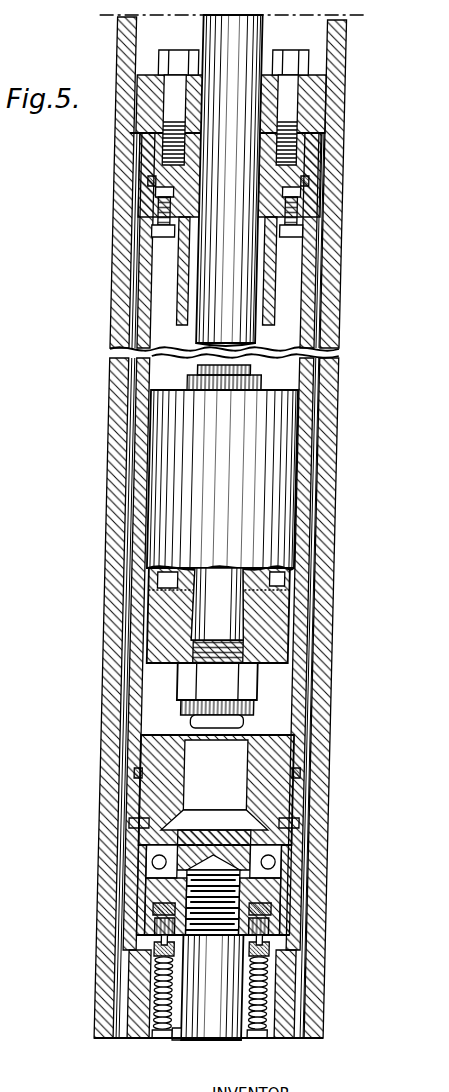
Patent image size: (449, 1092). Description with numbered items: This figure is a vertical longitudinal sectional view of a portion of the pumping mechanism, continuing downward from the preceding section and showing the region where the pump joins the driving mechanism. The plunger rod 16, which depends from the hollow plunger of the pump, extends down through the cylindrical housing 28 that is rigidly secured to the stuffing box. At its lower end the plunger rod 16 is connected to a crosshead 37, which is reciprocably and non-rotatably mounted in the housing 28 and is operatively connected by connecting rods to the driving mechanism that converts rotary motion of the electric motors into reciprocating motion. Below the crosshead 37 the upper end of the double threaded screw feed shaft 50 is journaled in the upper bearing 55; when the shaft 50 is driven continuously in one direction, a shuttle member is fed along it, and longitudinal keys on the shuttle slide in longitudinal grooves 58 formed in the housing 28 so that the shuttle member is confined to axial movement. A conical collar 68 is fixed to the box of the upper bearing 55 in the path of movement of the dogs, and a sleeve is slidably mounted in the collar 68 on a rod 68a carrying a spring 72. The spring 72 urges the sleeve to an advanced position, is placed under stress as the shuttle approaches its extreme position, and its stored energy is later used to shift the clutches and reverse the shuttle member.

The plunger rod 16 is at (241, 43).
The cylindrical housing 28 is at (347, 311).
The crosshead 37 is at (285, 659).
The double threaded screw feed shaft 50 is at (238, 1001).
The upper bearing 55 is at (306, 907).
The longitudinal grooves 58 is at (145, 1001).
The conical collar 68 is at (186, 1030).
The rod 68a is at (174, 1032).
The spring 72 is at (189, 1030).